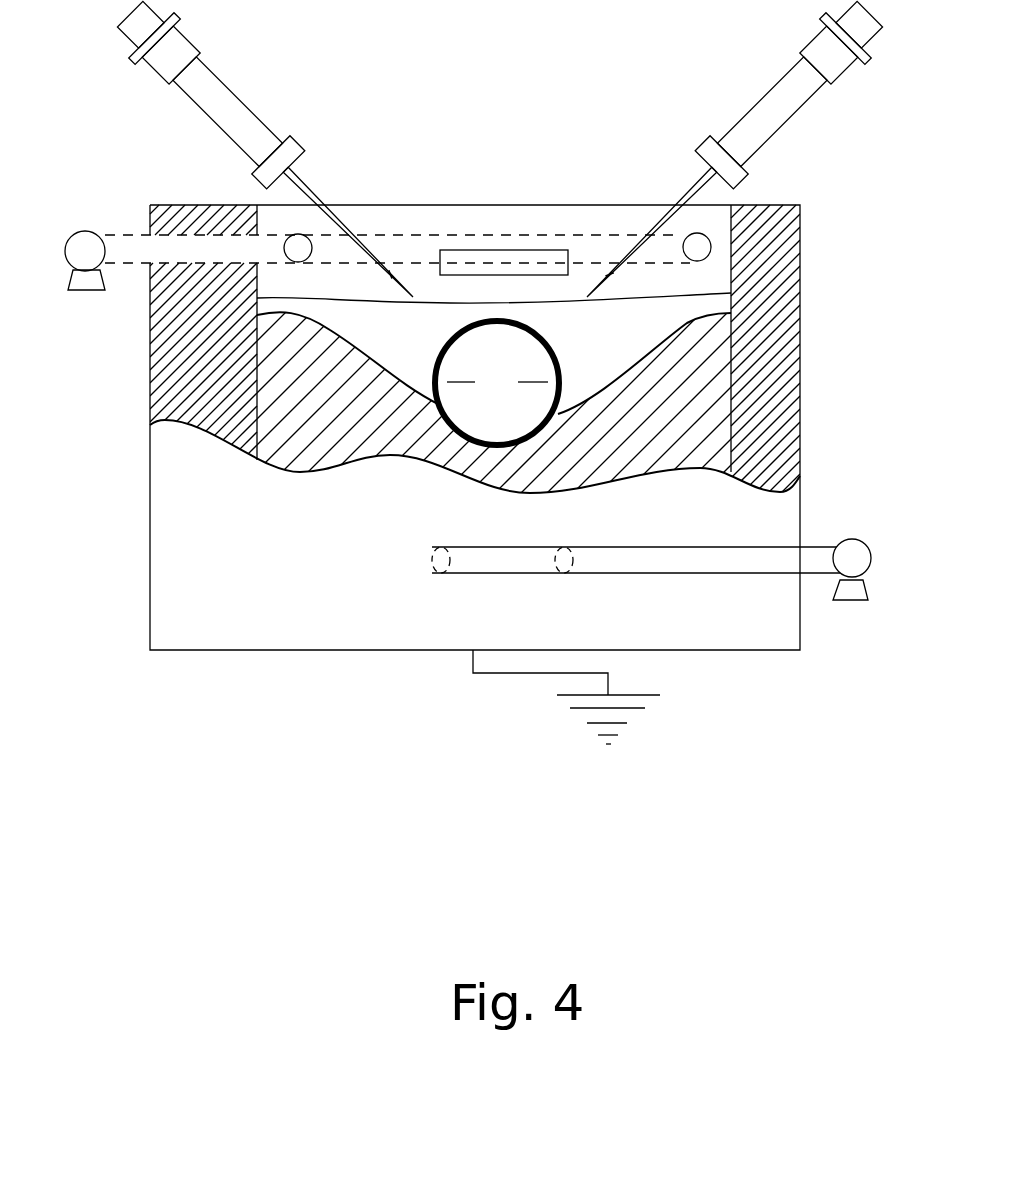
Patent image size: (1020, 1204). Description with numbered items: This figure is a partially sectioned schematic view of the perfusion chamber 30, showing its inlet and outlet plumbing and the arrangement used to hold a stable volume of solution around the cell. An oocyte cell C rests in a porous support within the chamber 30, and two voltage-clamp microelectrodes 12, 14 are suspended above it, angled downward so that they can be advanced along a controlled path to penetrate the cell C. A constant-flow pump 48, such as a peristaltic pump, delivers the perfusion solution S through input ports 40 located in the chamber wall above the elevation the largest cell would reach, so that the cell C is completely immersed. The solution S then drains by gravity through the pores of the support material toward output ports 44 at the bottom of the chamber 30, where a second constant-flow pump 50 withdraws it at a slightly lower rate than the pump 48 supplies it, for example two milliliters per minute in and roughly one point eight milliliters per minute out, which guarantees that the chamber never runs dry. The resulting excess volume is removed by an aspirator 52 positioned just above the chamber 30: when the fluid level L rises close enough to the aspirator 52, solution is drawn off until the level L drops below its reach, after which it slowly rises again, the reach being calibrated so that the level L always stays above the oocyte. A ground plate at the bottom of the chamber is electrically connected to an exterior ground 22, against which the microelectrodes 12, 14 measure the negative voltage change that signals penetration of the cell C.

The perfusion chamber 30 is at (160, 156).
The constant-flow pump 48 is at (83, 250).
The input ports 40 is at (285, 235).
The voltage-clamp microelectrode 12 is at (307, 173).
The voltage-clamp microelectrode 14 is at (690, 185).
The aspirator 52 is at (453, 258).
The fluid level L is at (670, 293).
The perfusion solution S is at (380, 323).
The oocyte cell C is at (497, 383).
The constant-flow pump 50 is at (852, 555).
The output ports 44 is at (435, 563).
The exterior ground 22 is at (653, 695).